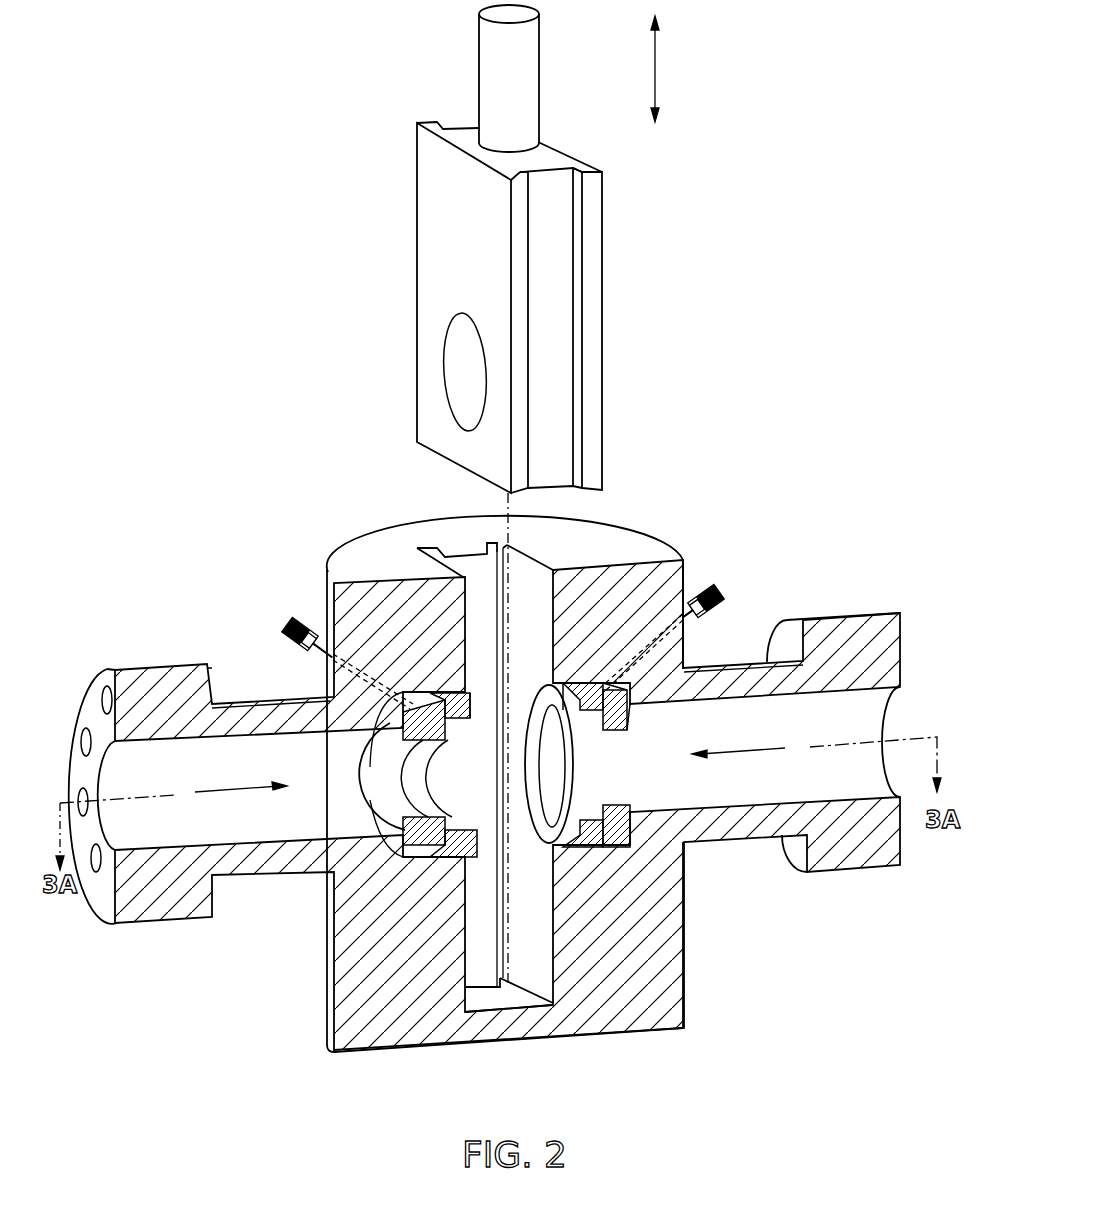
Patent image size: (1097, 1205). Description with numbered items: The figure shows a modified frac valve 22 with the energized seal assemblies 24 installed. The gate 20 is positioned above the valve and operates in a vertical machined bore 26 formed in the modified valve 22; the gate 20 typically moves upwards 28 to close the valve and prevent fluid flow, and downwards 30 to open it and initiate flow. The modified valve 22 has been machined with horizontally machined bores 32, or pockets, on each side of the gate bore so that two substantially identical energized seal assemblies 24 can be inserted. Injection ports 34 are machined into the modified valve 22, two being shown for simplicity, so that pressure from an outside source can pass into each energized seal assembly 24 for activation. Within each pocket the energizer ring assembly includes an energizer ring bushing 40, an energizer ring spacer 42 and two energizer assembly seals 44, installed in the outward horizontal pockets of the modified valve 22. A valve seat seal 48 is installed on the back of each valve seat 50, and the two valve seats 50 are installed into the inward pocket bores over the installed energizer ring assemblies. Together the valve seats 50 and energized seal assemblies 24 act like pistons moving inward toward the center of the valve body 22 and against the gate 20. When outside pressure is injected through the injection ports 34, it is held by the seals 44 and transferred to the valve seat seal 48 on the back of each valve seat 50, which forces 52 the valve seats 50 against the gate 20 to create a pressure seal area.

The gate 20 is at (420, 237).
The modified valve 22 is at (188, 950).
The energized seal assembly 24 is at (525, 860).
The vertical machined bore 26 is at (520, 568).
The upwards 28 is at (652, 27).
The downwards 30 is at (658, 118).
The horizontally machined bore 32 is at (530, 770).
The injection port 34 is at (288, 632).
The energizer ring bushing 40 is at (372, 860).
The energizer ring spacer 42 is at (633, 713).
The energizer assembly seal 44 is at (395, 742).
The valve seat seal 48 is at (603, 693).
The valve seat 50 is at (453, 866).
The forces 52 is at (247, 787).